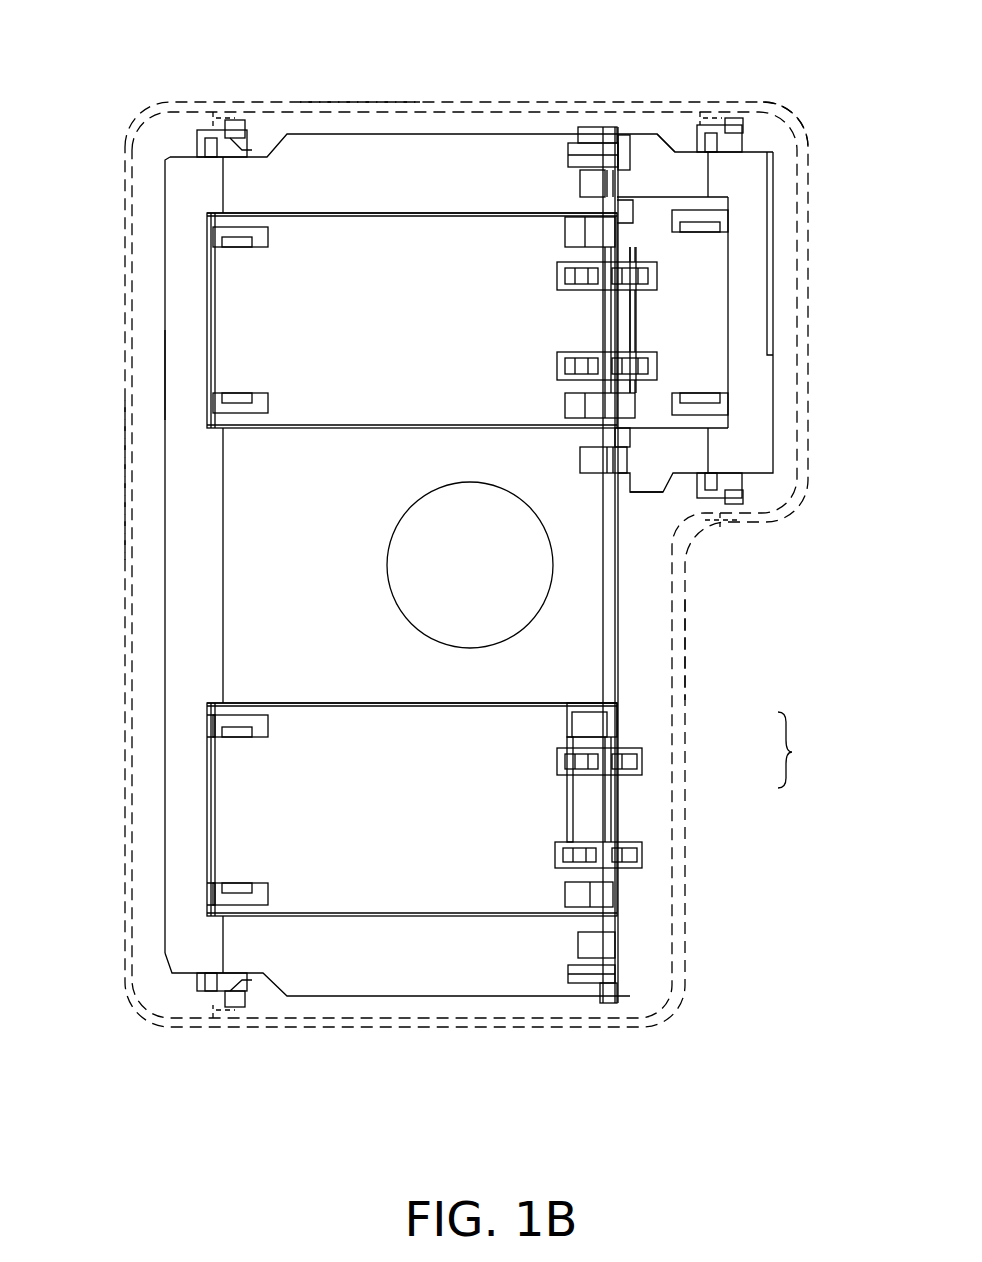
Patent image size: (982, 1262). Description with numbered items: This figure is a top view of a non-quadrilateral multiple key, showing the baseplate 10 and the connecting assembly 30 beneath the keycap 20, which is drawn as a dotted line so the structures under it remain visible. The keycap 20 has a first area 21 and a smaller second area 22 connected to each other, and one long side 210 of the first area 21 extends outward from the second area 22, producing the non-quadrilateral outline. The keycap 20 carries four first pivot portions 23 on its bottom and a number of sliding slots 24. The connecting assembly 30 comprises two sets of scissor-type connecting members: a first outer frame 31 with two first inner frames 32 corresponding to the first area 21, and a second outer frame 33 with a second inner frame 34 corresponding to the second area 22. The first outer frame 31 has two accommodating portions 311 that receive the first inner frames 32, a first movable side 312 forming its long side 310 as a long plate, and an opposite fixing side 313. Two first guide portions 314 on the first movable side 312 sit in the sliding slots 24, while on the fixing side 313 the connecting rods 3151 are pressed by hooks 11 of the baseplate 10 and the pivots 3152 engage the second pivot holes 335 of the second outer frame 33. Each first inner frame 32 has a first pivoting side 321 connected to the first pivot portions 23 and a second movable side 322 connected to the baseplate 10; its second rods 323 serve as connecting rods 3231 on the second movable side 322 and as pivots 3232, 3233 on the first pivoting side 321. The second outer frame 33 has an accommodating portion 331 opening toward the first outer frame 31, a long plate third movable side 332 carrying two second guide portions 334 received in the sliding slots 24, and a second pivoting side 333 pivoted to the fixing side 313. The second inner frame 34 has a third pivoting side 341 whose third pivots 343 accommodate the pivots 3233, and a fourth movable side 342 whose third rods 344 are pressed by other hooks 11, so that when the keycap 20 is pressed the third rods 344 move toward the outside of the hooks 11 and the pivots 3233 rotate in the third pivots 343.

The baseplate 10 is at (148, 132).
The keycap 20 is at (148, 243).
The first area 21 is at (355, 102).
The second area 22 is at (776, 105).
The long side 210 is at (128, 462).
The sliding slots 24 is at (210, 100).
The connecting assembly 30 is at (487, 128).
The first outer frame 31 is at (270, 525).
The long side 310 is at (163, 575).
The accommodating portions 311 is at (207, 212).
The first movable side 312 is at (178, 380).
The fixing side 313 is at (607, 620).
The first guide portions 314 is at (207, 145).
The connecting rods 3151 is at (612, 150).
The pivots 3152 is at (585, 190).
The first inner frames 32 is at (270, 332).
The first pivoting side 321 is at (600, 310).
The second movable side 322 is at (212, 298).
The second rods 323 is at (808, 750).
The connecting rods 3231 is at (215, 722).
The pivots 3232 is at (612, 765).
The pivots 3233 is at (605, 240).
The second outer frame 33 is at (745, 270).
The accommodating portion 331 is at (720, 430).
The third movable side 332 is at (778, 390).
The second pivoting side 333 is at (645, 150).
The second guide portions 334 is at (745, 140).
The second pivot holes 335 is at (546, 319).
The second inner frame 34 is at (695, 335).
The third pivoting side 341 is at (615, 308).
The fourth movable side 342 is at (730, 310).
The third pivots 343 is at (557, 319).
The third rods 344 is at (718, 215).
The hooks 11 is at (250, 727).
The first pivot portions 23 is at (552, 264).